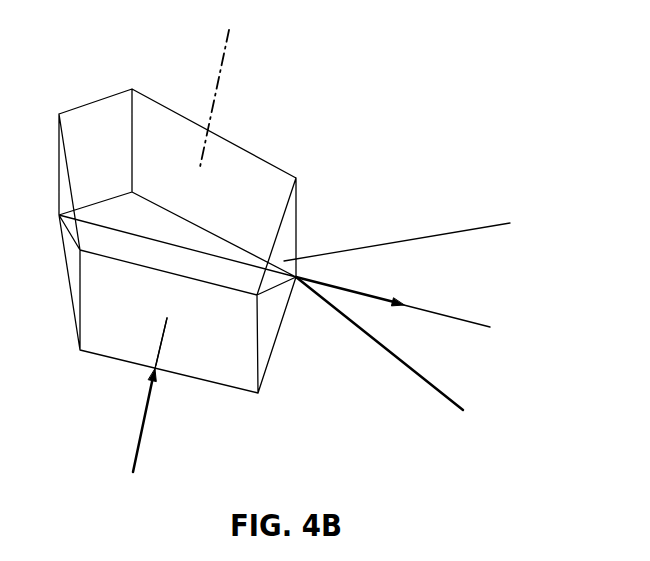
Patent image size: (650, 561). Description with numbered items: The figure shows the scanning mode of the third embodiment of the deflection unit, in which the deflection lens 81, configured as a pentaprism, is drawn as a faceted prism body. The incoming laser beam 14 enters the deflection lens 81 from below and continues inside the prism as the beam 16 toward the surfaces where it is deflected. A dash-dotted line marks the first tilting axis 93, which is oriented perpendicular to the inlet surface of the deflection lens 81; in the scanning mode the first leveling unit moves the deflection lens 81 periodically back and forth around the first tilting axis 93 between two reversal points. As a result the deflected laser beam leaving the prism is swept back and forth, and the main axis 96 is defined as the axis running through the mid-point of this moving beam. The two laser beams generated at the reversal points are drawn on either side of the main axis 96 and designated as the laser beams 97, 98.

The deflection lens 81 is at (92, 118).
The first tilting axis 93 is at (222, 72).
The laser beam 14 is at (138, 445).
The light beam inside prism 16 is at (150, 403).
The main axis 96 is at (353, 293).
The laser beam at first reversal point 97 is at (465, 228).
The laser beam at second reversal point 98 is at (360, 340).